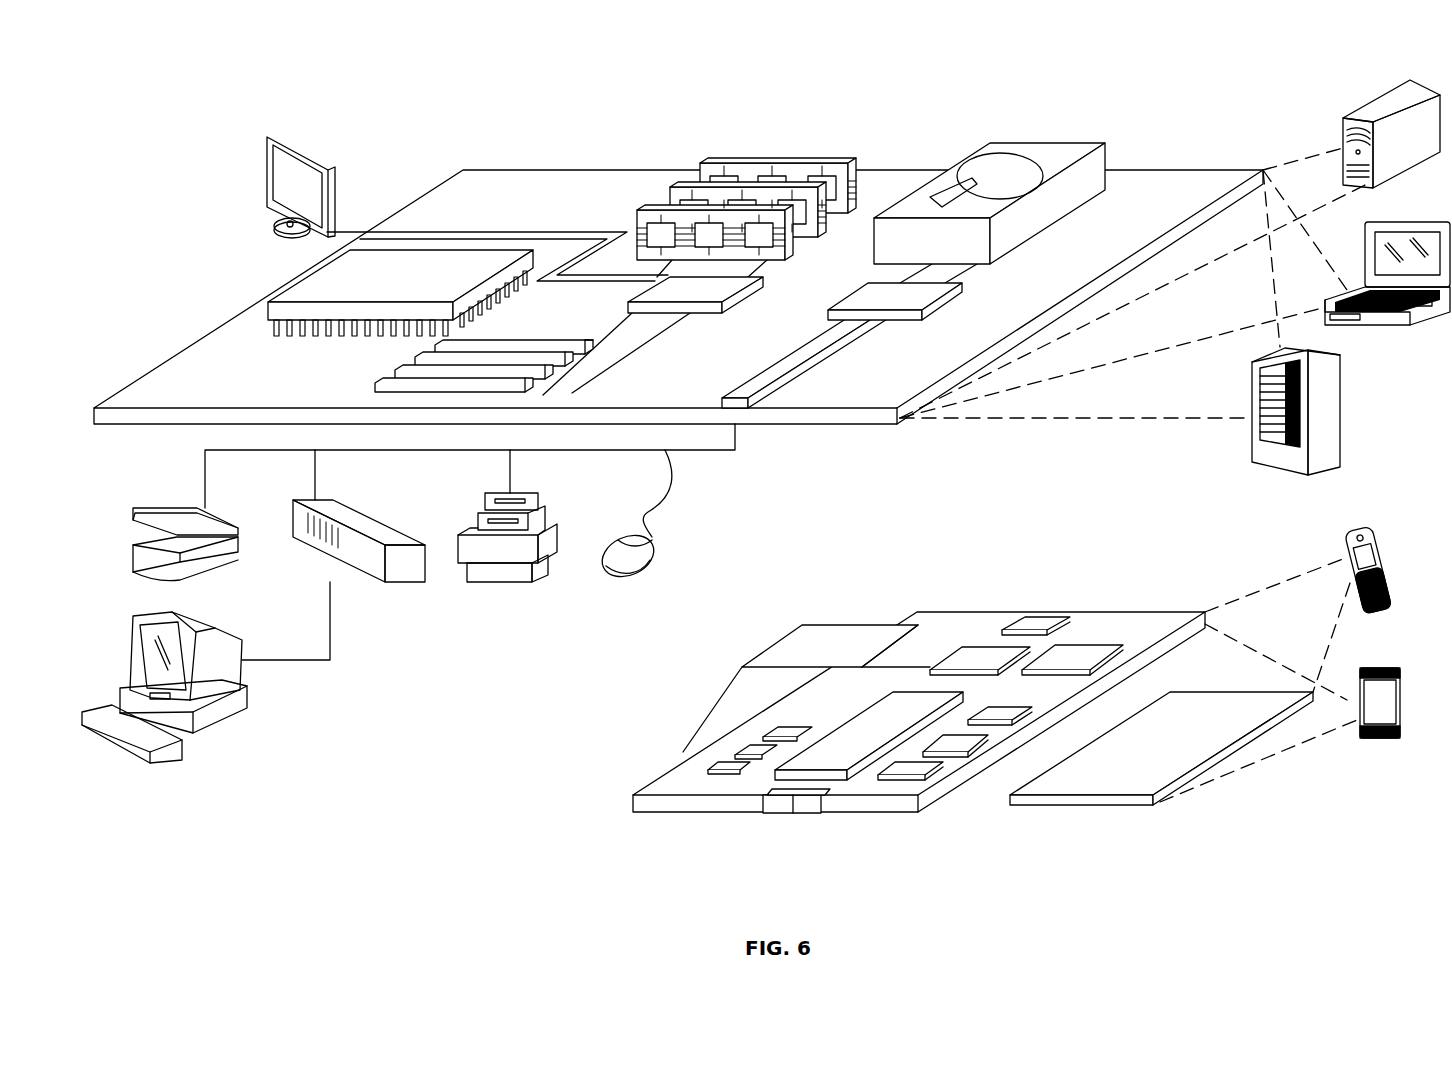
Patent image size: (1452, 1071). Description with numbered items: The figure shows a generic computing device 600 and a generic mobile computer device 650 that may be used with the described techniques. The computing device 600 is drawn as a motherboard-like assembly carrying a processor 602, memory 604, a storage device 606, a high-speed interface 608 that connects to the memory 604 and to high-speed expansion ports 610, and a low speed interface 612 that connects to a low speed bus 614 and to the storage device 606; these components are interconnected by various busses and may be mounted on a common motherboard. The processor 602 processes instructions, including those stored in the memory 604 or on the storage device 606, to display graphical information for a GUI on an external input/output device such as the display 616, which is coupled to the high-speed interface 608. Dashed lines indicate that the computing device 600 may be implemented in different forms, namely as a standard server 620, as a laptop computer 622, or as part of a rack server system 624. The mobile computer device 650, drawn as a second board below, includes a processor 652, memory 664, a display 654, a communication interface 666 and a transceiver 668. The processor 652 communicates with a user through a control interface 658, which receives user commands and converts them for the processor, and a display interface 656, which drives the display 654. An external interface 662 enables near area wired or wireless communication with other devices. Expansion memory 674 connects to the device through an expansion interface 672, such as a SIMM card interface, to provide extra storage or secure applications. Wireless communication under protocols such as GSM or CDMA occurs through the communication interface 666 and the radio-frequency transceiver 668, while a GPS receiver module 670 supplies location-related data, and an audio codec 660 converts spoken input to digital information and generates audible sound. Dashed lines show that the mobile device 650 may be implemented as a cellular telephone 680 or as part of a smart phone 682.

The computing device 600 is at (409, 110).
The processor 602 is at (295, 282).
The memory 604 is at (785, 162).
The storage device 606 is at (1034, 143).
The high-speed interface 608 is at (711, 287).
The high-speed expansion ports 610 is at (406, 367).
The low speed interface 612 is at (866, 295).
The low speed bus 614 is at (745, 392).
The display 616 is at (270, 137).
The standard server 620 is at (1366, 112).
The laptop computer 622 is at (1428, 222).
The rack server system 624 is at (1342, 410).
The mobile computer device 650 is at (584, 822).
The processor 652 is at (835, 743).
The display 654 is at (1205, 708).
The display interface 656 is at (922, 768).
The control interface 658 is at (960, 740).
The audio codec 660 is at (1003, 707).
The external interface 662 is at (793, 800).
The memory 664 is at (742, 752).
The communication interface 666 is at (980, 648).
The transceiver 668 is at (1078, 647).
The GPS receiver module 670 is at (1037, 623).
The expansion interface 672 is at (897, 625).
The expansion memory 674 is at (807, 625).
The cellular telephone 680 is at (1366, 527).
The smart phone 682 is at (1368, 667).